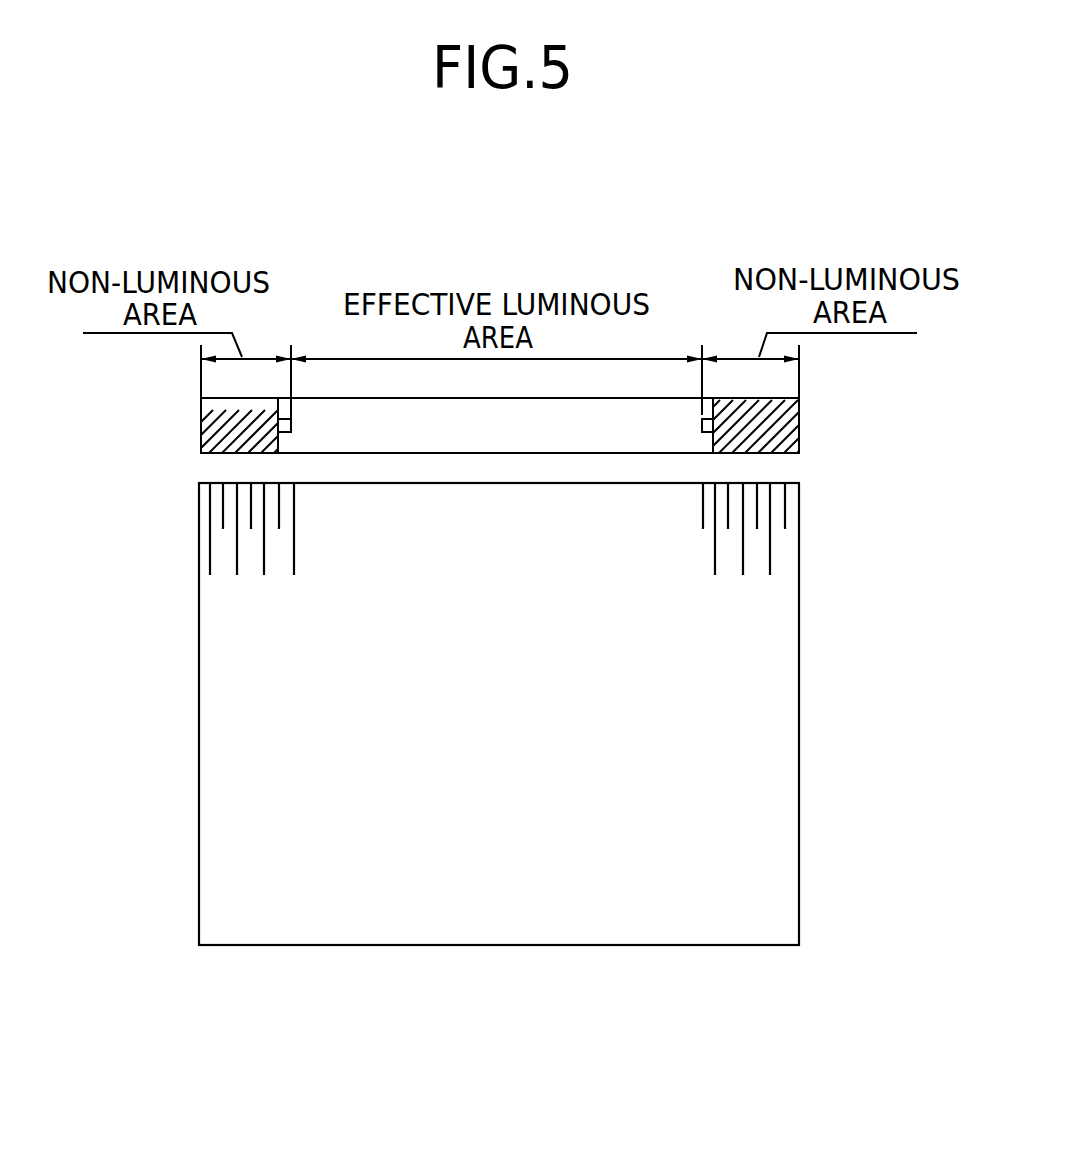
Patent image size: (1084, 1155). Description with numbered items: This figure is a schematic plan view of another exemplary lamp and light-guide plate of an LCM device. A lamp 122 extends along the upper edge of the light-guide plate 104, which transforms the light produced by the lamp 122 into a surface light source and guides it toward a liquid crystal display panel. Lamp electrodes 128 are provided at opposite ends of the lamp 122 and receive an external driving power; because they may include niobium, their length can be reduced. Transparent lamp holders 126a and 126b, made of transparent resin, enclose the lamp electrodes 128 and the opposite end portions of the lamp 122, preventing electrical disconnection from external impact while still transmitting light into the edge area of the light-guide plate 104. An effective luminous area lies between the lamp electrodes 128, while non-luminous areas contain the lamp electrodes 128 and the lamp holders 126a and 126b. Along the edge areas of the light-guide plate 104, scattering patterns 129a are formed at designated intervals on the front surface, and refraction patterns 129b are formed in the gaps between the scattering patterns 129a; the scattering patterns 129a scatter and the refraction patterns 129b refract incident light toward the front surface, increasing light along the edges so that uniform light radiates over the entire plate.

The light-guide plate 104 is at (790, 833).
The lamp 122 is at (327, 448).
The transparent lamp holder 126a is at (201, 414).
The transparent lamp holder 126b is at (799, 412).
The lamp electrode 128 is at (702, 425).
The scattering pattern 129a is at (785, 513).
The refraction pattern 129b is at (770, 557).